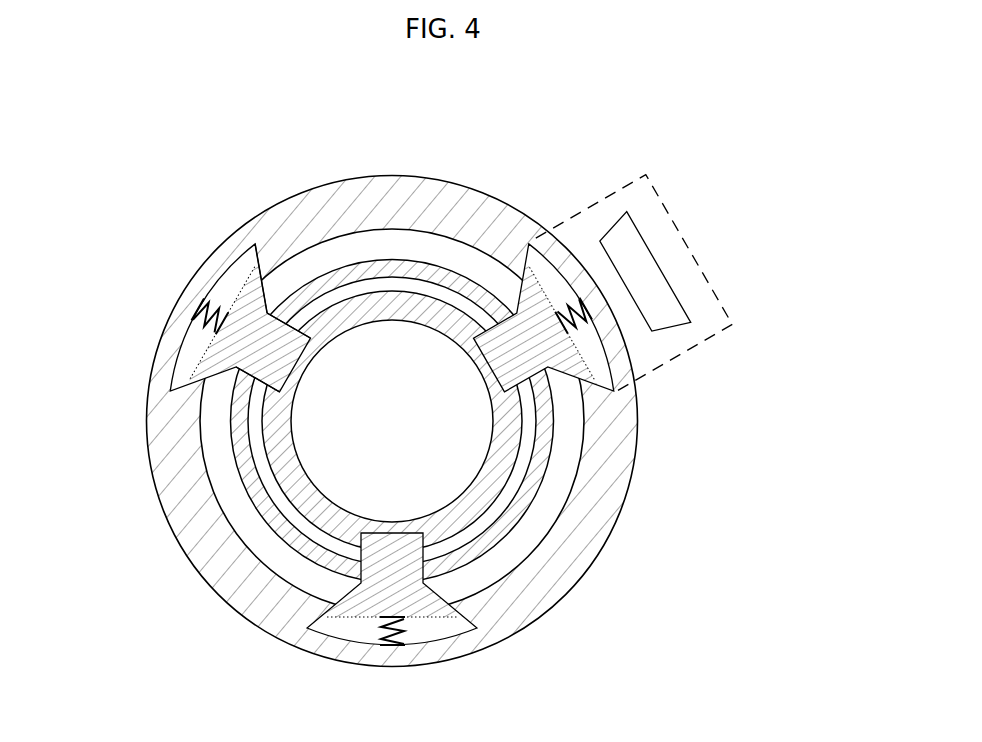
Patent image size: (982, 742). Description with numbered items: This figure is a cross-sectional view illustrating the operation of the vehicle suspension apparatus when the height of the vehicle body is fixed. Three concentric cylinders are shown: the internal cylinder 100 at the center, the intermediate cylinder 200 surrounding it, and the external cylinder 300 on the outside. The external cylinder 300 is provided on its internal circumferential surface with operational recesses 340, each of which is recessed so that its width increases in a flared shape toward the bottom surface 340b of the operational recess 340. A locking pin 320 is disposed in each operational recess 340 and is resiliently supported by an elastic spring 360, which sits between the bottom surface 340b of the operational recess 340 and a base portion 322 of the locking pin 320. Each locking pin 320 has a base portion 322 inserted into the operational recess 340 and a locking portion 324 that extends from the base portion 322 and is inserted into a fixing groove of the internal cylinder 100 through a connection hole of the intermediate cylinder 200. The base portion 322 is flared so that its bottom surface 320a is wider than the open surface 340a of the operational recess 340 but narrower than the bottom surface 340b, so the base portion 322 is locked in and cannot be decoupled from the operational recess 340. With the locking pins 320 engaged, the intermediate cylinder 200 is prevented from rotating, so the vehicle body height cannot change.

The internal cylinder 100 is at (410, 307).
The intermediate cylinder 200 is at (535, 500).
The external cylinder 300 is at (573, 575).
The locking pin 320 is at (287, 122).
The base portion 322 is at (252, 313).
The locking portion 324 is at (288, 333).
The operational recess 340 is at (195, 382).
The open surface of the operational recess 340a is at (648, 315).
The bottom surface of the operational recess 340b is at (678, 226).
The bottom surface of the base portion 320a is at (658, 263).
The elastic spring 360 is at (391, 646).